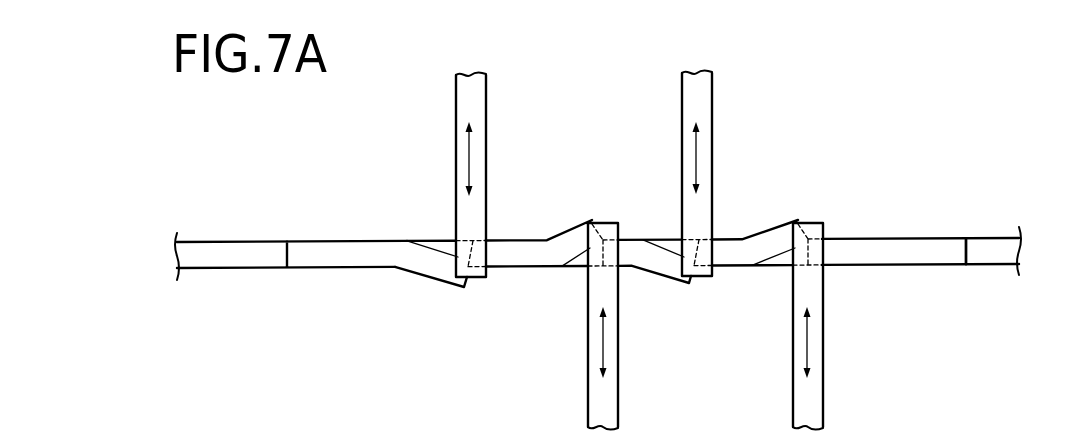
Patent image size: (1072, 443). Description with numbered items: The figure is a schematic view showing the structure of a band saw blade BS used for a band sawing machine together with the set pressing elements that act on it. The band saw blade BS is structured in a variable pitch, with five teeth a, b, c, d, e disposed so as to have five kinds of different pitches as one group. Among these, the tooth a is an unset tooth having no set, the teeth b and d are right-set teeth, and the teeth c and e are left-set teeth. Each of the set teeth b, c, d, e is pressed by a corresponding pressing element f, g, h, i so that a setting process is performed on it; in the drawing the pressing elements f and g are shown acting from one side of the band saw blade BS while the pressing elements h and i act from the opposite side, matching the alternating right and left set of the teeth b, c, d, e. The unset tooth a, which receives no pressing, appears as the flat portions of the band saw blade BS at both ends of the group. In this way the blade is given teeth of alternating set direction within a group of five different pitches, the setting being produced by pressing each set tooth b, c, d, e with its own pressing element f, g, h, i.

The unset tooth a is at (273, 250).
The right-set tooth b is at (438, 258).
The left-set tooth c is at (574, 231).
The right-set tooth d is at (663, 258).
The left-set tooth e is at (776, 228).
The pressing element f is at (458, 104).
The pressing element g is at (687, 102).
The pressing element h is at (592, 405).
The pressing element i is at (798, 404).
The band saw blade BS is at (942, 172).